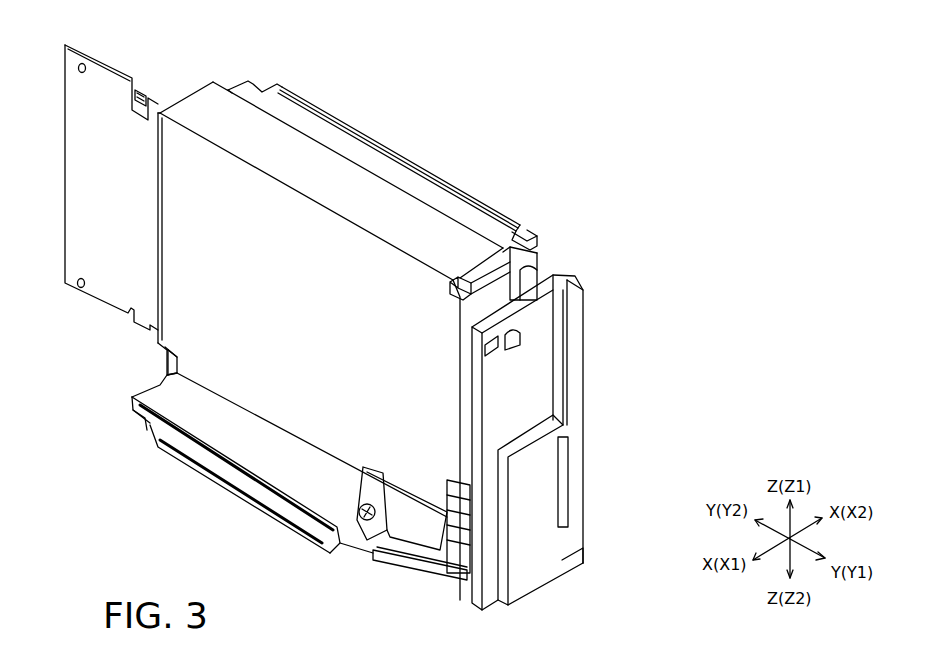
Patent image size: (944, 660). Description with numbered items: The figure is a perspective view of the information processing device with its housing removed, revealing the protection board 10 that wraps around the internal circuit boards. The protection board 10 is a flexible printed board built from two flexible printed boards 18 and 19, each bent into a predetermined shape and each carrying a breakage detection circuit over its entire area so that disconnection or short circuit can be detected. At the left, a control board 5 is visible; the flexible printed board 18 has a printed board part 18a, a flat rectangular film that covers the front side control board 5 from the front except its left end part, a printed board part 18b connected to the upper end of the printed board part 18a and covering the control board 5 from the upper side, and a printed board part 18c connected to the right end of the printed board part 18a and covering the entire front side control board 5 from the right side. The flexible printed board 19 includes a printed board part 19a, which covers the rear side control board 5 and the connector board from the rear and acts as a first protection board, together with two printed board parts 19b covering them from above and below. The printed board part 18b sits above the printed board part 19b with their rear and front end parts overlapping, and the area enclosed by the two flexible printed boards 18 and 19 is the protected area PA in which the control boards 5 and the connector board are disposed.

The control board 5 is at (63, 192).
The protection board 10 is at (303, 309).
The protected area PA is at (228, 80).
The flexible printed board 19 is at (413, 146).
The printed board part 19b is at (413, 146).
The printed board part 19a is at (530, 237).
The flexible printed board 18 is at (264, 458).
The printed board part 18a is at (157, 343).
The printed board part 18b is at (390, 183).
The printed board part 18c is at (513, 282).